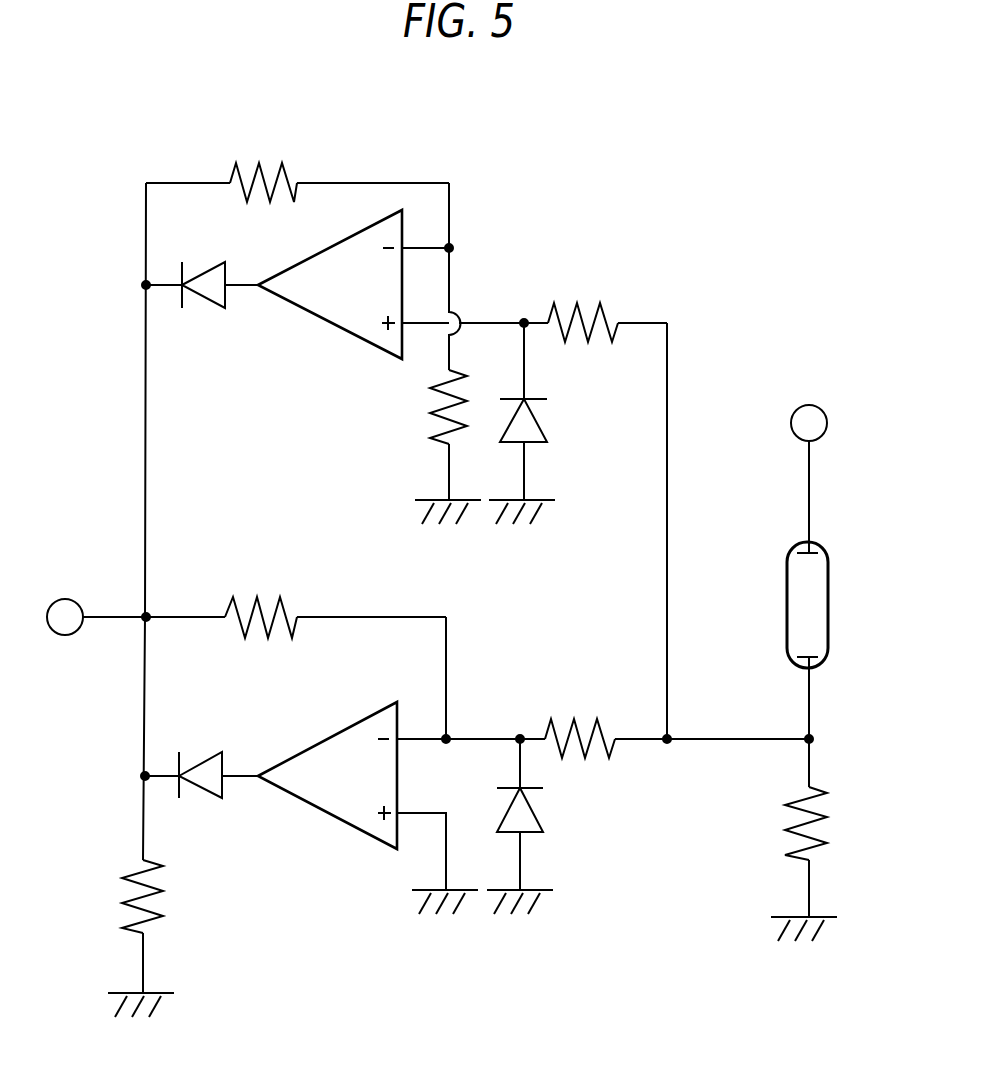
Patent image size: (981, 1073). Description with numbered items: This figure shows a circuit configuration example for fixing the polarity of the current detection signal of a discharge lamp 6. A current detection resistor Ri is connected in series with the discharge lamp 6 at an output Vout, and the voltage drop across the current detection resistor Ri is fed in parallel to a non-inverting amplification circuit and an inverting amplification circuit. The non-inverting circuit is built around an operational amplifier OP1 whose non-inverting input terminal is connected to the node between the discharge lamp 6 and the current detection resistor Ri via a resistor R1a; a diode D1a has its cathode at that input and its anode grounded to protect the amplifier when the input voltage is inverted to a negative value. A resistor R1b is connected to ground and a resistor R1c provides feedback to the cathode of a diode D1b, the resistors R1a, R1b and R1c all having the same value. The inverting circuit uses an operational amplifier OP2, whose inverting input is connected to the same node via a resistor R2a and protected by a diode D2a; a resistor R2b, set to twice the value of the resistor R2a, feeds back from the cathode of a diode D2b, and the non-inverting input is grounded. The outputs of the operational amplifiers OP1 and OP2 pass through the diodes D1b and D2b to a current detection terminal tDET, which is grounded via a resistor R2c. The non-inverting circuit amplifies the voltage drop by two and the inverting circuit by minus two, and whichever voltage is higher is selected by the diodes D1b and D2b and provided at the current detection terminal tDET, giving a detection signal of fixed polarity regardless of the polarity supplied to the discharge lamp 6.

The discharge lamp 6 is at (828, 603).
The output voltage terminal Vout is at (805, 458).
The current detection terminal tDET is at (64, 600).
The operational amplifier OP1 is at (330, 284).
The operational amplifier OP2 is at (327, 775).
The resistor R1a is at (583, 304).
The resistor R1b is at (421, 407).
The resistor R1c is at (263, 166).
The resistor R2a is at (580, 721).
The resistor R2b is at (261, 601).
The resistor R2c is at (116, 896).
The current detection resistor Ri is at (821, 823).
The diode D1a is at (548, 382).
The diode D1b is at (200, 305).
The diode D2a is at (545, 785).
The diode D2b is at (201, 795).